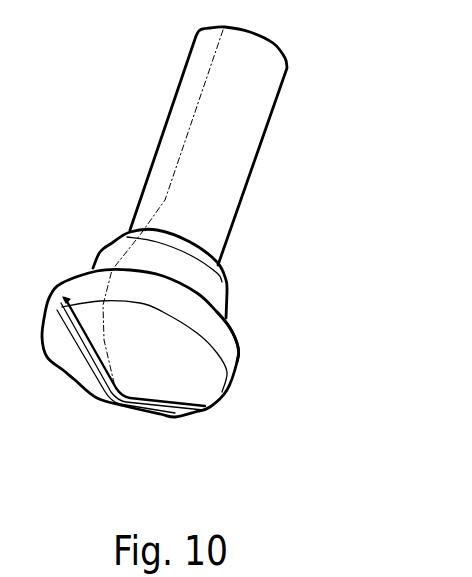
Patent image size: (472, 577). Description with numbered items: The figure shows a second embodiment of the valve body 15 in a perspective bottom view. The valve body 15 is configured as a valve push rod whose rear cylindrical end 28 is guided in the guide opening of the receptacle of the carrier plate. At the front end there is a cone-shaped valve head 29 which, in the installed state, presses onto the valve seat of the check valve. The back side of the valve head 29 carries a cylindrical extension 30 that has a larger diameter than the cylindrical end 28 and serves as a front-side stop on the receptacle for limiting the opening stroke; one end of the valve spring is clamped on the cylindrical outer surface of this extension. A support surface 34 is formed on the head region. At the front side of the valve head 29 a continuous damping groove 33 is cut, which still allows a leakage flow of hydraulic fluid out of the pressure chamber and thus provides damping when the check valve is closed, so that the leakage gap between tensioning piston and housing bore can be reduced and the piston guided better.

The valve body 15 is at (293, 25).
The cylindrical end 28 is at (252, 145).
The valve head 29 is at (233, 358).
The cylindrical extension 30 is at (108, 257).
The damping groove 33 is at (170, 415).
The support surface 34 is at (232, 315).